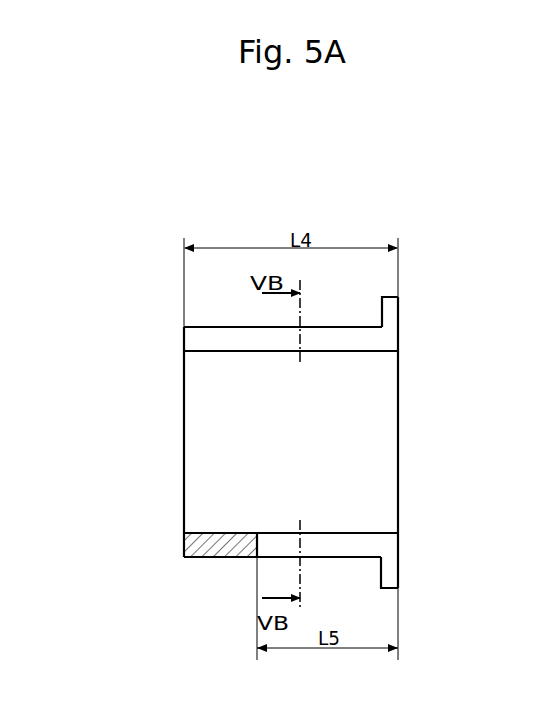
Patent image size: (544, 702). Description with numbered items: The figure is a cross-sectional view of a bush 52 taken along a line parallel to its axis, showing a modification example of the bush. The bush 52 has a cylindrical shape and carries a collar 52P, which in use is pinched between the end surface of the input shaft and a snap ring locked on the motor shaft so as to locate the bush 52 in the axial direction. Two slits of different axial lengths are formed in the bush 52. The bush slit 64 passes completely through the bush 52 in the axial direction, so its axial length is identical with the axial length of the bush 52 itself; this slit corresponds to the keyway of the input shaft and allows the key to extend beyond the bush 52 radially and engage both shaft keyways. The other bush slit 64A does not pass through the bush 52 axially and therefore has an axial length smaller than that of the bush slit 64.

The bush 52 is at (407, 290).
The collar 52P is at (392, 310).
The bush slit 64 is at (272, 340).
The bush slit 64A is at (323, 540).